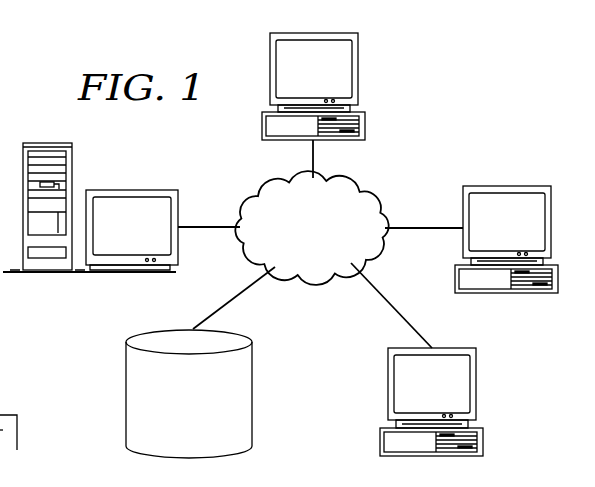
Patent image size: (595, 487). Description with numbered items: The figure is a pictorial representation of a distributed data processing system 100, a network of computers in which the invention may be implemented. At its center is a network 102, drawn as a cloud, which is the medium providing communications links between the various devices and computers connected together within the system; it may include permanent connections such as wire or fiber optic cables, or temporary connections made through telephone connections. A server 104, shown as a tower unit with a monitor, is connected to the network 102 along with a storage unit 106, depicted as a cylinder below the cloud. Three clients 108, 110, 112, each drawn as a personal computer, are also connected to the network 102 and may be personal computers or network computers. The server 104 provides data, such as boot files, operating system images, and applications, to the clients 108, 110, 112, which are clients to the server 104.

The distributed data processing system 100 is at (480, 92).
The network 102 is at (332, 256).
The server 104 is at (153, 237).
The storage unit 106 is at (210, 431).
The client 108 is at (333, 79).
The client 110 is at (528, 231).
The client 112 is at (452, 394).